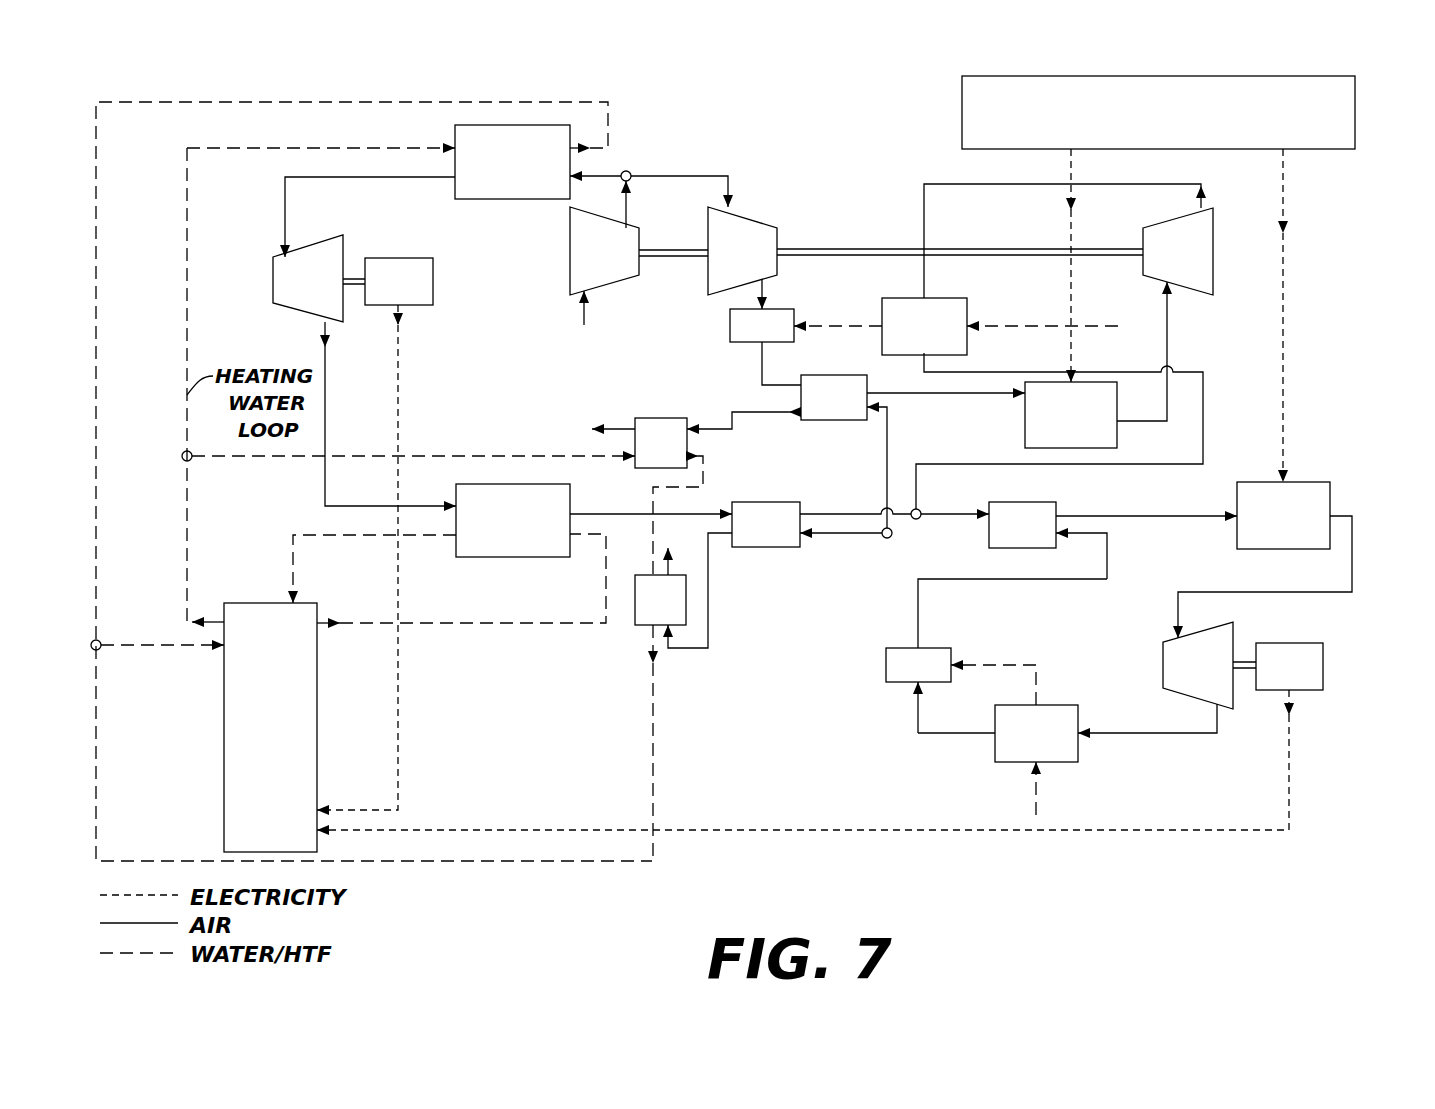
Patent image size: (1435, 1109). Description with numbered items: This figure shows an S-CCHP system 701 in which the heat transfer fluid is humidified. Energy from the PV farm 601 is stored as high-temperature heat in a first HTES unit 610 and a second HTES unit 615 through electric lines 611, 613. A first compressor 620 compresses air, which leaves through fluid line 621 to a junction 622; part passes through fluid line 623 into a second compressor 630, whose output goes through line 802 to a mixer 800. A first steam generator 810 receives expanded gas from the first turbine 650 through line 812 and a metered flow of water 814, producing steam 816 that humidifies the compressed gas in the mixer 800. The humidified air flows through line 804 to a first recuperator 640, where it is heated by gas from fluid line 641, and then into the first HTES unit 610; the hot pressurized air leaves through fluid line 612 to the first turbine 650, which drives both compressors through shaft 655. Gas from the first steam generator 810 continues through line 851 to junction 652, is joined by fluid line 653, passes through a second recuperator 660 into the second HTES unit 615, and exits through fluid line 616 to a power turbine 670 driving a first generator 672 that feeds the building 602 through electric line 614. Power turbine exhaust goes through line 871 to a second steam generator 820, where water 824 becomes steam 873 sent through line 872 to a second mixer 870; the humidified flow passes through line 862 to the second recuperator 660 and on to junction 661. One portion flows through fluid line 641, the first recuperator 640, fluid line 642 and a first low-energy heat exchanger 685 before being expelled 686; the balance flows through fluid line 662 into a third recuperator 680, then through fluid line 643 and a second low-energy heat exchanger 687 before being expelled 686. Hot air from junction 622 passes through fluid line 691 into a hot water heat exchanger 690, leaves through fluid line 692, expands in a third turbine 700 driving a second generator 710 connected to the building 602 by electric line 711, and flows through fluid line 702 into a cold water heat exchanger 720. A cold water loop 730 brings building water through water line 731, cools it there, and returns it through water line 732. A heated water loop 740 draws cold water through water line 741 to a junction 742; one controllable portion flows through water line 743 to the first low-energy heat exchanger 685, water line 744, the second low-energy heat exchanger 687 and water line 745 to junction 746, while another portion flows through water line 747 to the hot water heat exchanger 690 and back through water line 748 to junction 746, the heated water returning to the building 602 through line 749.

The PV farm 601 is at (1355, 92).
The building 602 is at (224, 755).
The first HTES unit 610 is at (1117, 432).
The electric line 611 is at (1071, 184).
The fluid line 612 is at (1167, 350).
The electric line 613 is at (1283, 326).
The electric line 614 is at (1145, 832).
The second HTES unit 615 is at (1330, 490).
The fluid line 616 is at (1352, 560).
The first compressor 620 is at (570, 248).
The fluid line 621 is at (628, 205).
The junction 622 is at (632, 172).
The fluid line 623 is at (728, 180).
The second compressor 630 is at (752, 212).
The first recuperator 640 is at (801, 420).
The fluid line 641 is at (887, 470).
The fluid line 642 is at (758, 400).
The fluid line 643 is at (708, 630).
The first turbine 650 is at (1160, 225).
The junction 652 is at (921, 511).
The fluid line 653 is at (820, 514).
The shaft 655 is at (840, 250).
The second recuperator 660 is at (1060, 502).
The junction 661 is at (887, 540).
The fluid line 662 is at (800, 540).
The power turbine 670 is at (1233, 638).
The first generator 672 is at (1323, 668).
The third recuperator 680 is at (775, 502).
The first low-energy heat exchanger 685 is at (660, 418).
The expelled exhaust 686 is at (610, 428).
The second low-energy heat exchanger 687 is at (634, 627).
The hot water heat exchanger 690 is at (455, 130).
The fluid line 691 is at (608, 172).
The fluid line 692 is at (398, 177).
The third turbine 700 is at (273, 282).
The S-CCHP system 701 is at (1375, 218).
The fluid line 702 is at (325, 390).
The second electrical generator 710 is at (433, 272).
The electric line 711 is at (398, 420).
The cold water heat exchanger 720 is at (500, 557).
The cold water loop 730 is at (432, 632).
The water line 731 is at (352, 622).
The water line 732 is at (293, 565).
The heated water loop 740 is at (93, 277).
The water line 741 is at (222, 622).
The junction 742 is at (182, 454).
The water line to first heat exchanger 743 is at (272, 456).
The water line 744 is at (703, 458).
The water line 745 is at (653, 780).
The junction 746 is at (91, 645).
The water line 747 is at (187, 222).
The water line 748 is at (345, 100).
The line 749 is at (150, 650).
The mixer 800 is at (730, 326).
The line 802 is at (762, 300).
The line 804 is at (762, 365).
The first steam generator 810 is at (940, 298).
The line 812 is at (1095, 184).
The flow of water 814 is at (1100, 327).
The steam 816 is at (836, 330).
The second steam generator 820 is at (995, 745).
The water 824 is at (1036, 795).
The line 851 is at (1203, 423).
The line 862 is at (918, 625).
The second mixer 870 is at (886, 665).
The line 871 is at (1145, 735).
The line 872 is at (918, 720).
The steam 873 is at (1038, 686).